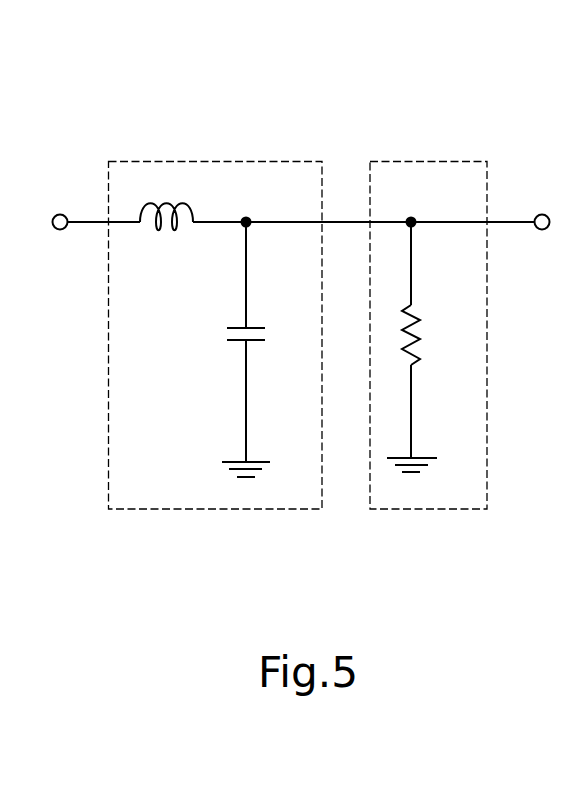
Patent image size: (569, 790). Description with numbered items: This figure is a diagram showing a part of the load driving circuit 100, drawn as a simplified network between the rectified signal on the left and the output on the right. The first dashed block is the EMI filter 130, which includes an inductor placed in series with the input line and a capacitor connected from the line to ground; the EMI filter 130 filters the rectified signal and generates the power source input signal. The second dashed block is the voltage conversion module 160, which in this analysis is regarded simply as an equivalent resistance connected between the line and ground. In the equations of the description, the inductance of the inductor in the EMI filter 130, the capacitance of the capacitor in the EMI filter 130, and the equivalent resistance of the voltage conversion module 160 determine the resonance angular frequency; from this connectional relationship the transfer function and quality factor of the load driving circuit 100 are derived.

The load driving circuit 100 is at (163, 88).
The electromagnetic interface (EMI) filter 130 is at (247, 160).
The voltage conversion module 160 is at (443, 160).